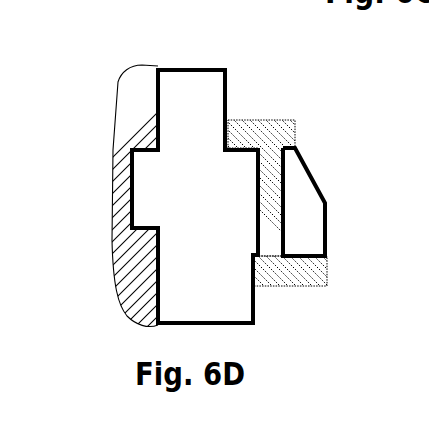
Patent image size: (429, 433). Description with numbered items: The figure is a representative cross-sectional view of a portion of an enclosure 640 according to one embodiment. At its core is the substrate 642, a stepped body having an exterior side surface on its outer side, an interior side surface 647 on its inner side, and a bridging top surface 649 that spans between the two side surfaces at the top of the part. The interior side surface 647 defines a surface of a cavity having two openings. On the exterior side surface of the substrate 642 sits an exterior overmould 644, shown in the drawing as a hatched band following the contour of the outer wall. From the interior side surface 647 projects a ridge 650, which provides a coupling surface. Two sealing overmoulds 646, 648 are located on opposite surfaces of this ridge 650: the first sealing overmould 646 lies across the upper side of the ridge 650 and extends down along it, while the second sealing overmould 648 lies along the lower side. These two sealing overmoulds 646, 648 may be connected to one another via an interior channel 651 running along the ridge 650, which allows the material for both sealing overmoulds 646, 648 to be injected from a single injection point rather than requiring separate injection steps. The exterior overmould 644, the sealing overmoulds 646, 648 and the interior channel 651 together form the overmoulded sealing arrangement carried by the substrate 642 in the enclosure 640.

The seal assembly 640 is at (100, 321).
The substrate 642 is at (215, 304).
The exterior overmould 644 is at (108, 233).
The sealing overmould 646 is at (268, 120).
The interior side surface 647 is at (228, 102).
The sealing overmould 648 is at (273, 287).
The bridging top surface 649 is at (193, 70).
The ridge 650 is at (360, 185).
The interior channel 651 is at (258, 203).